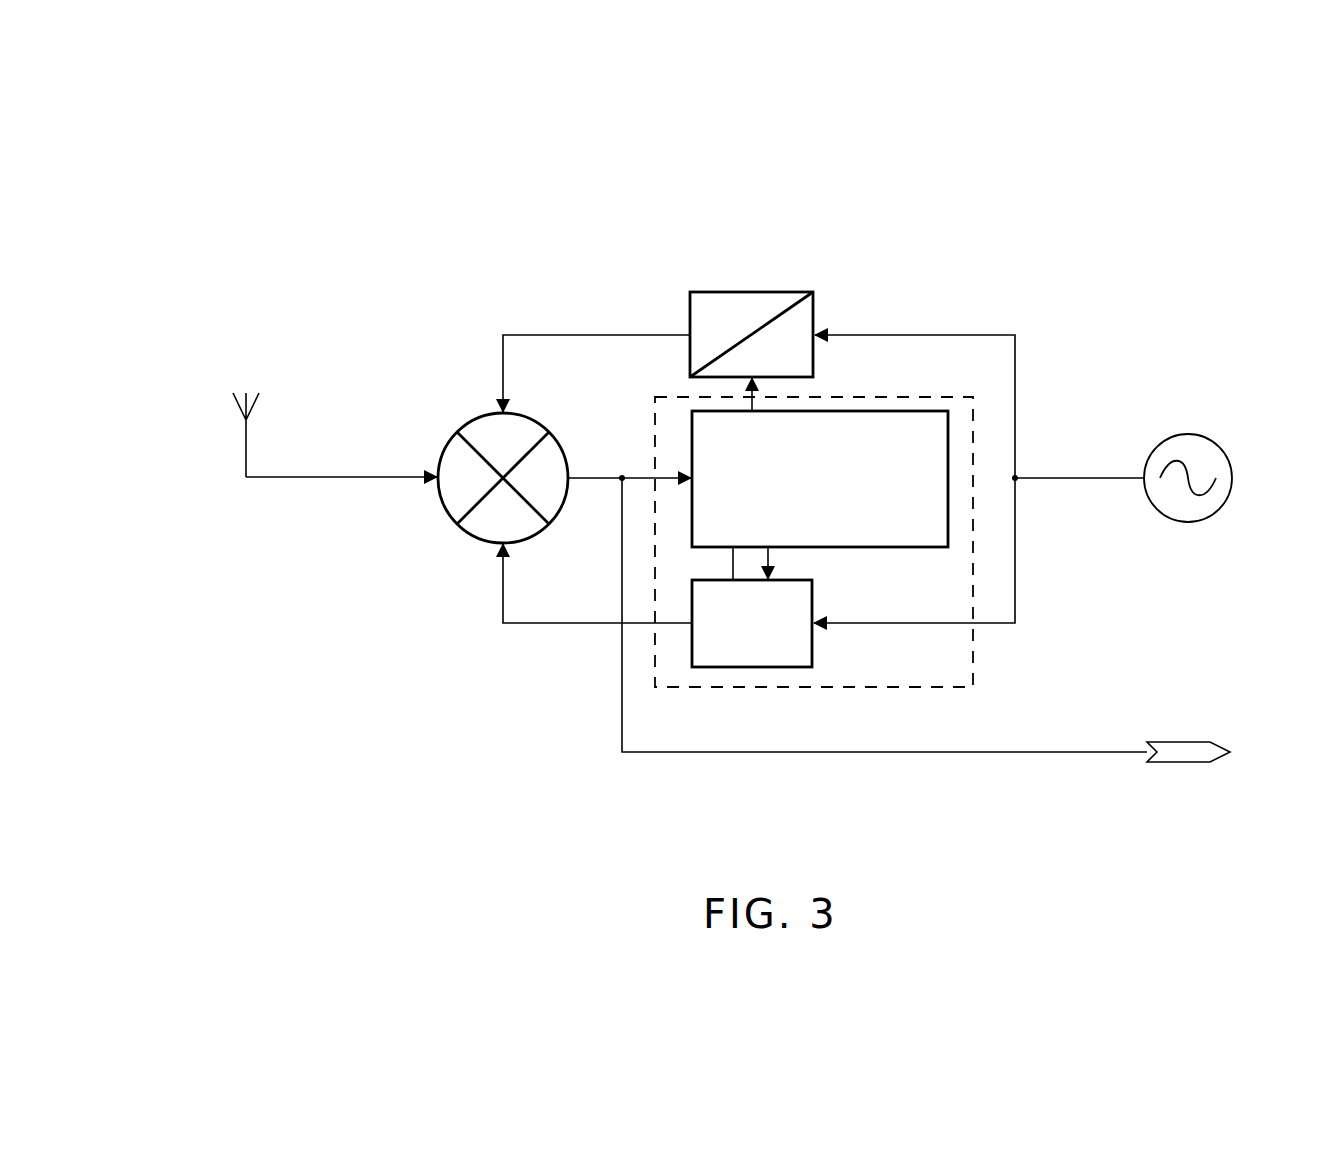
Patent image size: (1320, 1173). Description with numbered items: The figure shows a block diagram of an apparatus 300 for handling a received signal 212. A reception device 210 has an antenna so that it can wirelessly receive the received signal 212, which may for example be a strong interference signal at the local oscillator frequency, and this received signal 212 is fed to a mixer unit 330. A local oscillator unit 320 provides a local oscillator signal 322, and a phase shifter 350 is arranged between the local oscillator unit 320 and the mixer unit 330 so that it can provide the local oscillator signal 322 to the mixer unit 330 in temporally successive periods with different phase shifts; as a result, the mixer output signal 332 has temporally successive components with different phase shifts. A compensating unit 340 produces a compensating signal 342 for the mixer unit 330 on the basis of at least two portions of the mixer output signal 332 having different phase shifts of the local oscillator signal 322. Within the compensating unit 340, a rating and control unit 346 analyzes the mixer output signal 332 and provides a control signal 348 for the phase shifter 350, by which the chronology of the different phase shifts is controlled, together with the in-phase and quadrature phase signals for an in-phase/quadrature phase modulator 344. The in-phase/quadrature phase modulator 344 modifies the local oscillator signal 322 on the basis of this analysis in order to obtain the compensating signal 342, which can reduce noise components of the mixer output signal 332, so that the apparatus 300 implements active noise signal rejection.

The apparatus 300 is at (716, 225).
The reception device 210 is at (235, 447).
The received signal 212 is at (354, 472).
The mixer unit 330 is at (460, 540).
The phase shifter 350 is at (805, 282).
The control signal 348 is at (762, 393).
The rating and control unit 346 is at (905, 398).
The in-phase/quadrature phase modulator 344 is at (742, 670).
The compensating signal 342 is at (556, 628).
The compensating unit 340 is at (990, 652).
The local oscillator unit 320 is at (1208, 525).
The local oscillator signal 322 is at (1078, 485).
The mixer output signal 332 is at (1170, 766).